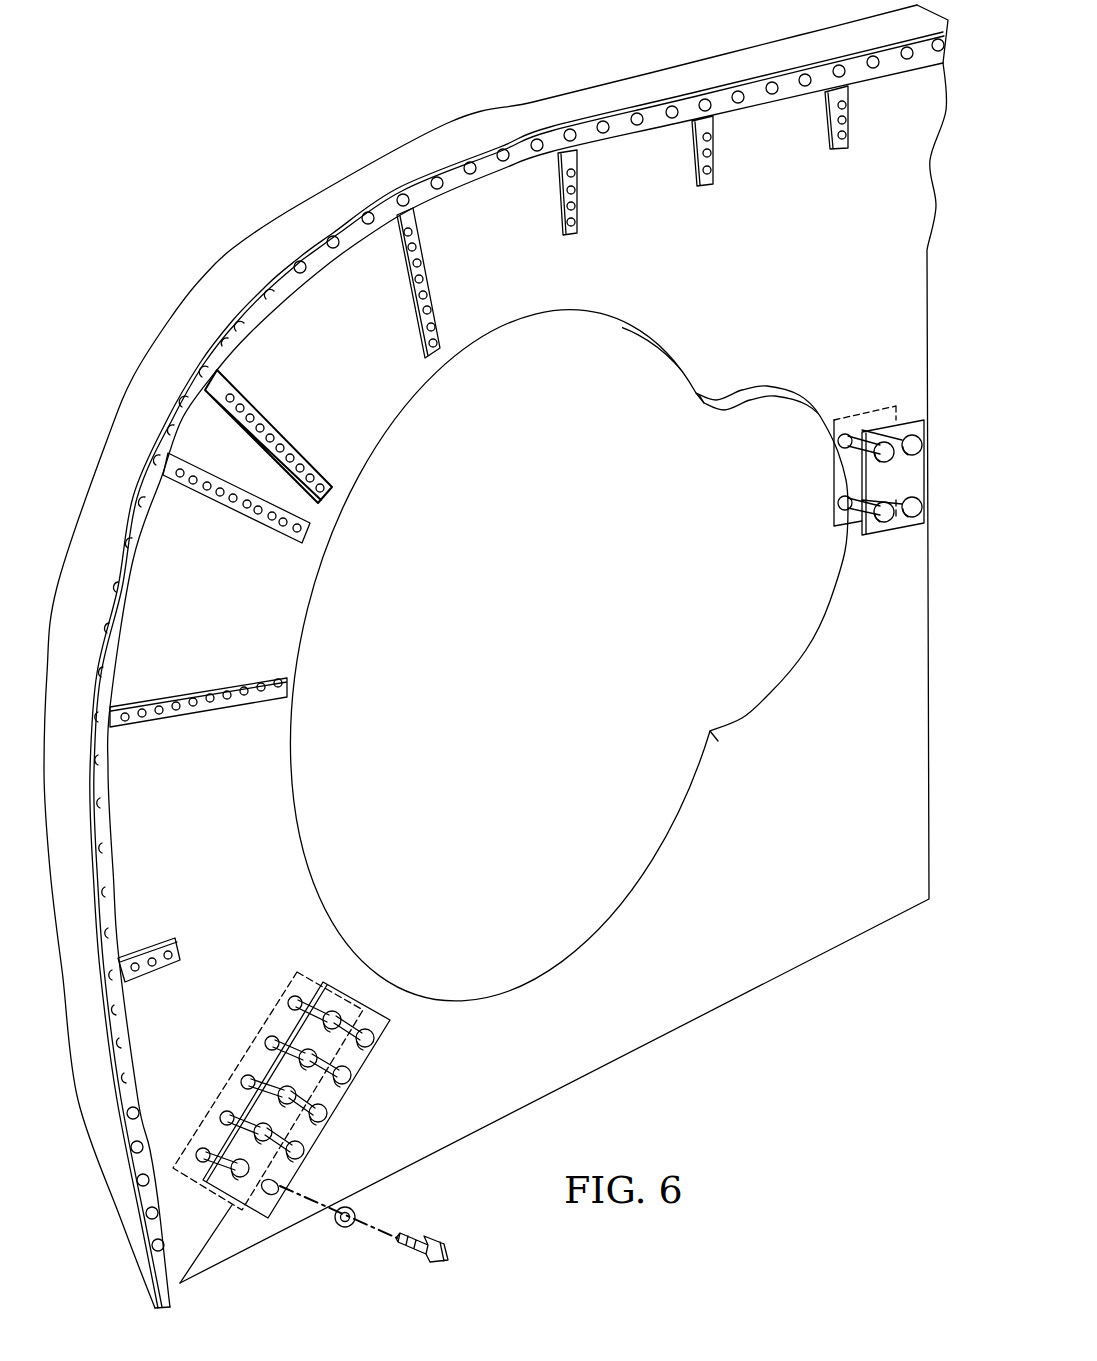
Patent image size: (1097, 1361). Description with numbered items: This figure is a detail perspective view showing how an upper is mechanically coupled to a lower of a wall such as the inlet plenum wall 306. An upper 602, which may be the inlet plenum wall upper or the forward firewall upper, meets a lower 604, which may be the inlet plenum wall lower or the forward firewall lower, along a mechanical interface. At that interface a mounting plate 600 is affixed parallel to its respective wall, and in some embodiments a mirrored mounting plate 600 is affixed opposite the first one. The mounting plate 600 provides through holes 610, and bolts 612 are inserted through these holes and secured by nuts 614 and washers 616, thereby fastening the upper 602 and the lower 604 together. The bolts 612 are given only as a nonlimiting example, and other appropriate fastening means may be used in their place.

The inlet plenum wall 306 is at (496, 656).
The upper 602 is at (265, 225).
The lower 604 is at (664, 1036).
The mounting plate 600 is at (891, 545).
The nuts 614 is at (257, 1058).
The through holes 610 is at (281, 1186).
The washers 616 is at (342, 1228).
The bolts 612 is at (413, 1253).